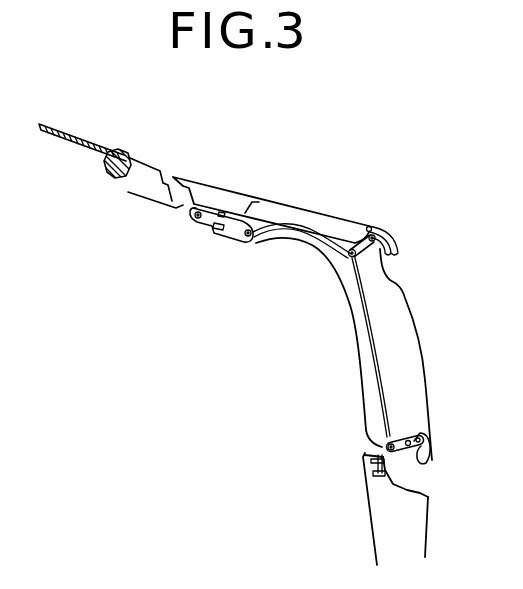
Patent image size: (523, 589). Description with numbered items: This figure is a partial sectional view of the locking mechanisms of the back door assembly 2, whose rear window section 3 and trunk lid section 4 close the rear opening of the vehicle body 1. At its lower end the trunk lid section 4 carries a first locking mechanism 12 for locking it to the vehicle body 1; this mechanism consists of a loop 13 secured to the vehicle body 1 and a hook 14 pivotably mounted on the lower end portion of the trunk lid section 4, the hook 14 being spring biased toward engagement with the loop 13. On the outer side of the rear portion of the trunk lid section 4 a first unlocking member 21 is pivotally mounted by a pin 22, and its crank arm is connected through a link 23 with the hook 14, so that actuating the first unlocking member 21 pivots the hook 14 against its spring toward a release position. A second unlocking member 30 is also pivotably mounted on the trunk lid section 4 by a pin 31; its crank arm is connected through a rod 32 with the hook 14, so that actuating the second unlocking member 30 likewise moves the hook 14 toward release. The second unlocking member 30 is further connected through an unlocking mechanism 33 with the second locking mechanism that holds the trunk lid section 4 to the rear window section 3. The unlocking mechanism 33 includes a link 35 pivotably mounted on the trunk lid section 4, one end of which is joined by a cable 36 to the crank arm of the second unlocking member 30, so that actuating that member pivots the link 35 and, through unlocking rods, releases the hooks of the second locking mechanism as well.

The vehicle body 1 is at (384, 541).
The back door assembly 2 is at (88, 119).
The rear window section 3 is at (125, 150).
The trunk lid section 4 is at (318, 207).
The first locking mechanism 12 is at (390, 478).
The loop 13 is at (363, 457).
The hook 14 is at (400, 470).
The first unlocking member 21 is at (428, 458).
The pin 22 is at (432, 438).
The link 23 is at (410, 428).
The second unlocking member 30 is at (388, 268).
The pin 31 is at (373, 229).
The rod 32 is at (377, 360).
The unlocking mechanism 33 is at (217, 240).
The link 35 is at (253, 244).
The cable 36 is at (338, 223).